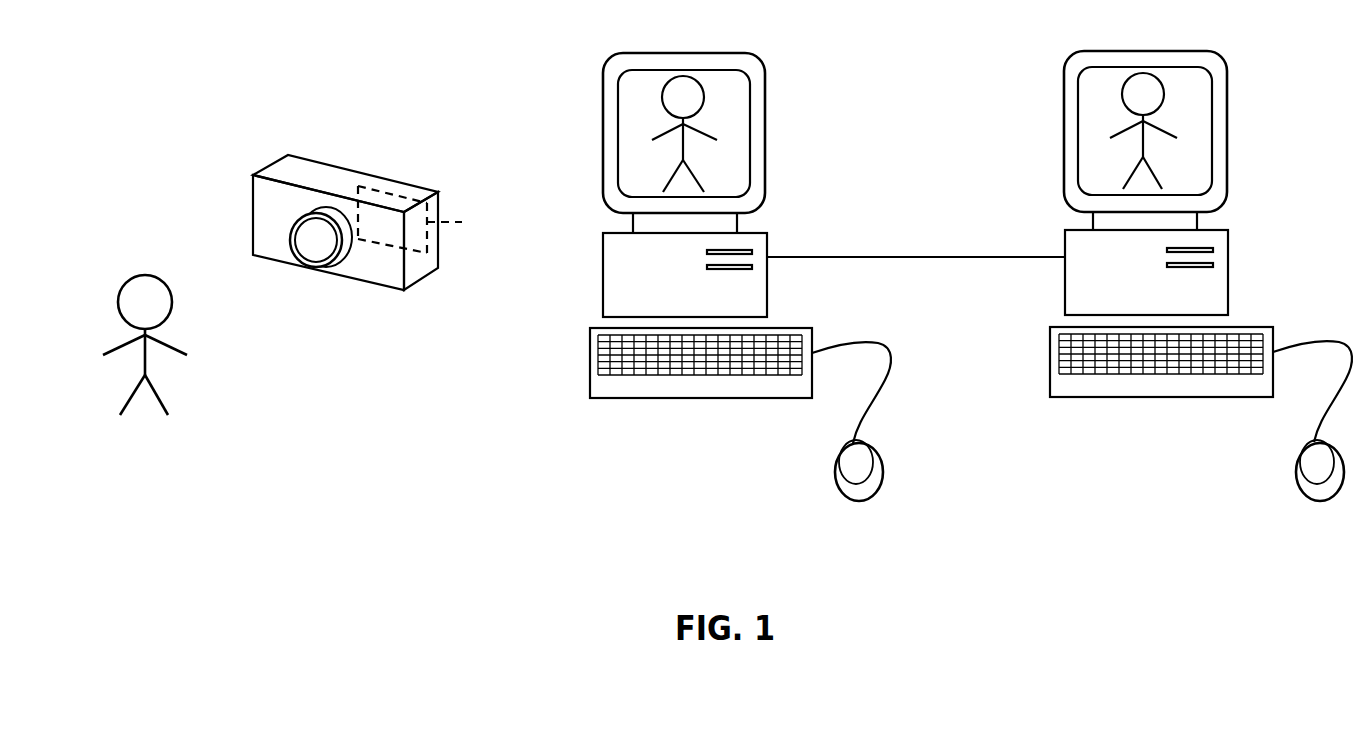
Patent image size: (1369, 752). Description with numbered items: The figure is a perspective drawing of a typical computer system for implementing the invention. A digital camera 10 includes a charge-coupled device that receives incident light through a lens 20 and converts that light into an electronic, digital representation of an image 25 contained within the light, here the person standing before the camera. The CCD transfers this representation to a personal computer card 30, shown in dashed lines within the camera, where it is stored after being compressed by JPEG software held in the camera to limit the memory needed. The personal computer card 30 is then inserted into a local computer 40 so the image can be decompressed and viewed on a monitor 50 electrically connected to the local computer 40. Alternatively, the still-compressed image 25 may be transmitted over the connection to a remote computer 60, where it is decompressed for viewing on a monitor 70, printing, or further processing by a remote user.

The digital camera 10 is at (354, 156).
The lens 20 is at (290, 229).
The image 25 is at (196, 386).
The personal computer card 30 is at (460, 222).
The local computer 40 is at (687, 277).
The monitor 50 is at (767, 95).
The remote computer 60 is at (1150, 276).
The monitor 70 is at (1227, 113).